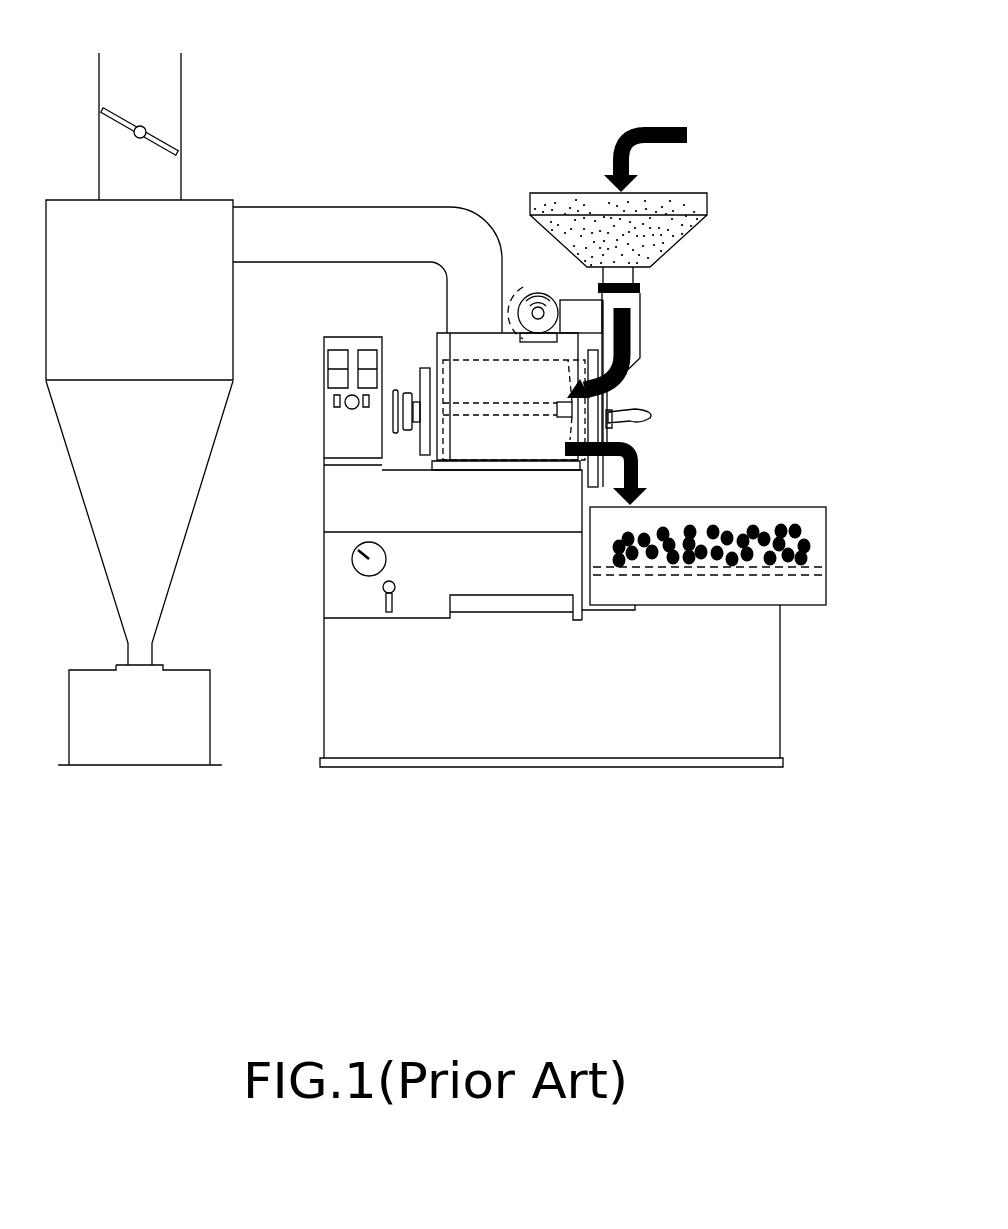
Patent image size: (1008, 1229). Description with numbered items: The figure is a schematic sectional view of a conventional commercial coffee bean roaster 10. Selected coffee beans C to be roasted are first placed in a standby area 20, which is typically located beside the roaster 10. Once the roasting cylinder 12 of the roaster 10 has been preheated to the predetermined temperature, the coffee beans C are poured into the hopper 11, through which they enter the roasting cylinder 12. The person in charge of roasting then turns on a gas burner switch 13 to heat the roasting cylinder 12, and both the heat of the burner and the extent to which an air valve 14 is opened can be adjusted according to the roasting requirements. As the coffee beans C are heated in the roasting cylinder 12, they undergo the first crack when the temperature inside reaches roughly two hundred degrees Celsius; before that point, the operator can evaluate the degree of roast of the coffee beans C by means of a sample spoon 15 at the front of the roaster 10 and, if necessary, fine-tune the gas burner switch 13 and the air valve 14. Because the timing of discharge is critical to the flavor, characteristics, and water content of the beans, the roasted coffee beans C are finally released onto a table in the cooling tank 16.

The roaster 10 is at (461, 431).
The hopper 11 is at (700, 205).
The roasting cylinder 12 is at (512, 280).
The gas burner switch 13 is at (387, 600).
The air valve 14 is at (163, 129).
The sample spoon 15 is at (655, 418).
The cooling tank 16 is at (831, 523).
The standby area 20 is at (527, 591).
The coffee beans C is at (652, 233).